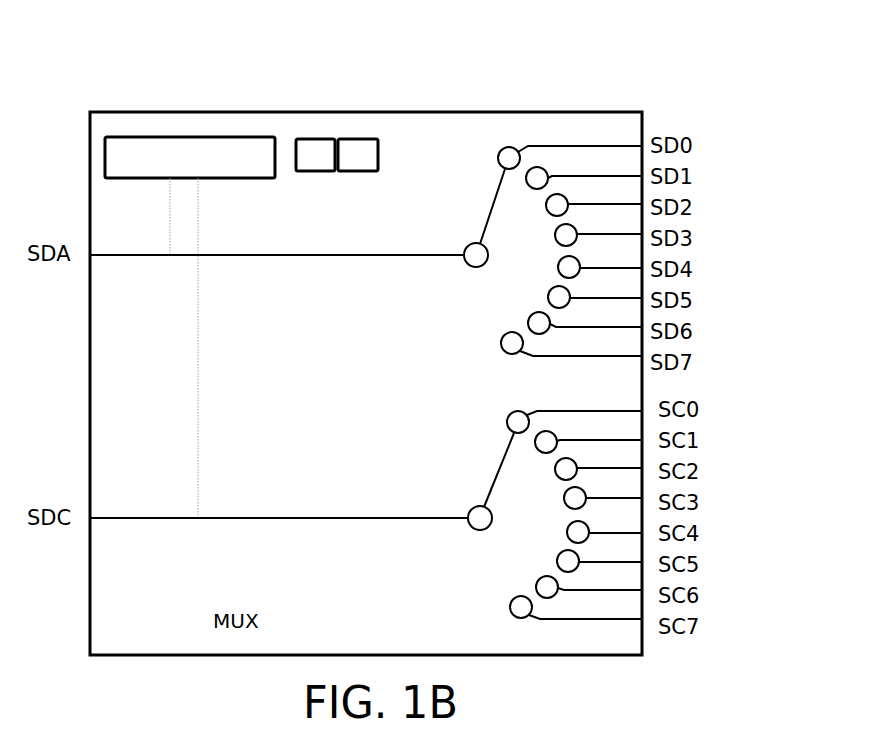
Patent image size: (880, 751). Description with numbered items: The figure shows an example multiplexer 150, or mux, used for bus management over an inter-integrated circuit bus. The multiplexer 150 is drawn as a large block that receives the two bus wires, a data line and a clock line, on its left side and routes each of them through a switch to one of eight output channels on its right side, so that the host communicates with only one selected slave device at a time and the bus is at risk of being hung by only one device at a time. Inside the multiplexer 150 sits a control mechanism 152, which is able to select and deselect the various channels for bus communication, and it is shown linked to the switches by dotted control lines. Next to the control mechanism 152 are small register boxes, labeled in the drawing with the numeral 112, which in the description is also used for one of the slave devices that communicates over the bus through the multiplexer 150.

The multiplexer 150 is at (791, 98).
The control mechanism 152 is at (190, 157).
The device 112 is at (323, 120).